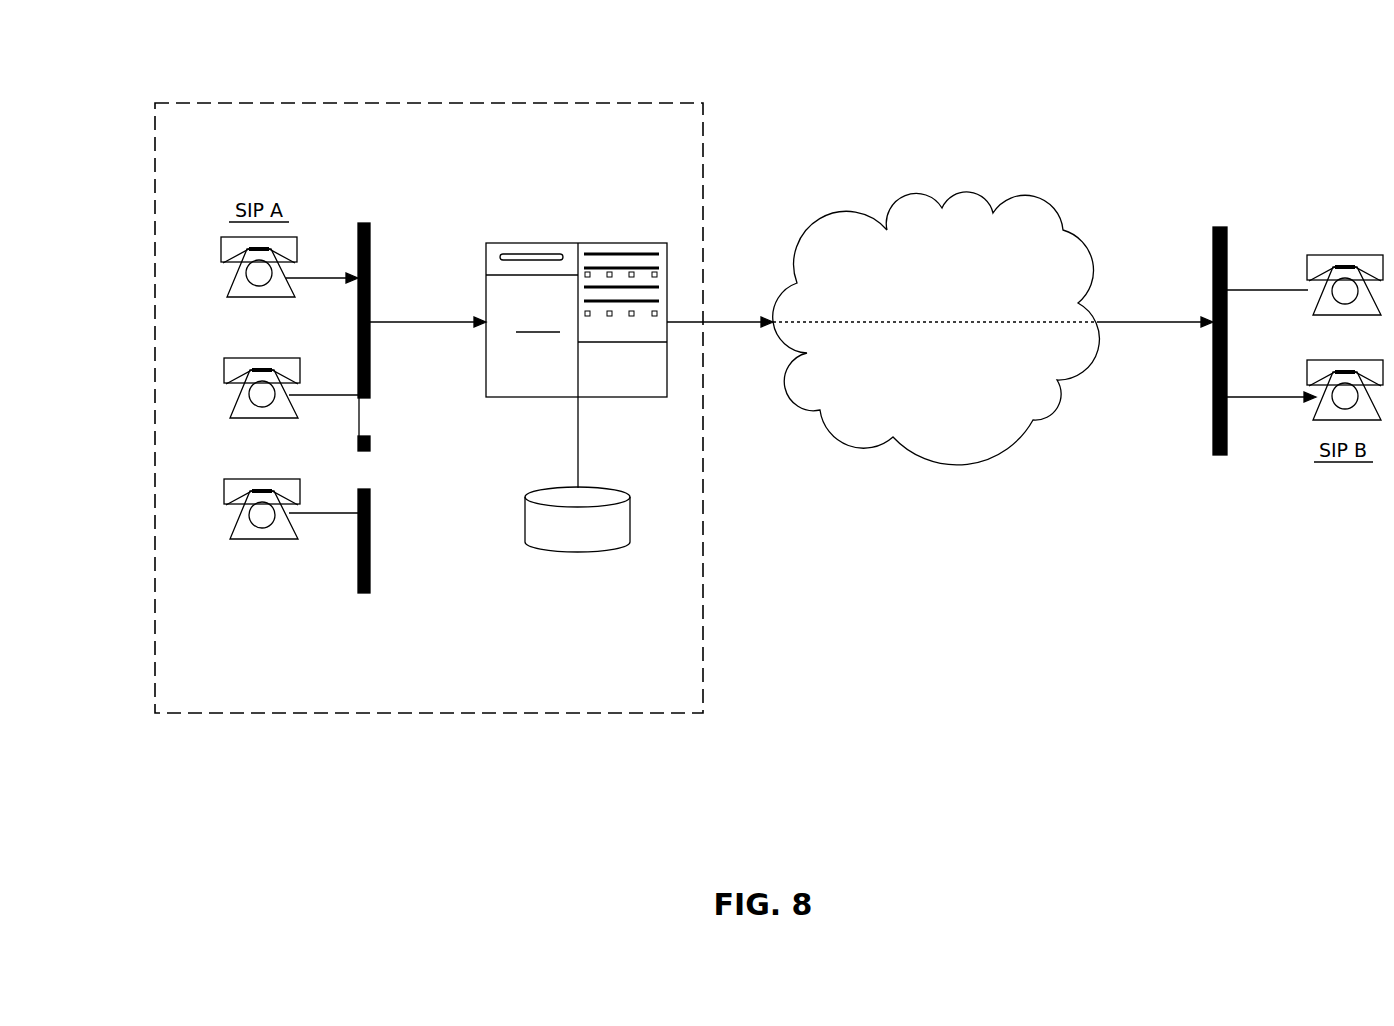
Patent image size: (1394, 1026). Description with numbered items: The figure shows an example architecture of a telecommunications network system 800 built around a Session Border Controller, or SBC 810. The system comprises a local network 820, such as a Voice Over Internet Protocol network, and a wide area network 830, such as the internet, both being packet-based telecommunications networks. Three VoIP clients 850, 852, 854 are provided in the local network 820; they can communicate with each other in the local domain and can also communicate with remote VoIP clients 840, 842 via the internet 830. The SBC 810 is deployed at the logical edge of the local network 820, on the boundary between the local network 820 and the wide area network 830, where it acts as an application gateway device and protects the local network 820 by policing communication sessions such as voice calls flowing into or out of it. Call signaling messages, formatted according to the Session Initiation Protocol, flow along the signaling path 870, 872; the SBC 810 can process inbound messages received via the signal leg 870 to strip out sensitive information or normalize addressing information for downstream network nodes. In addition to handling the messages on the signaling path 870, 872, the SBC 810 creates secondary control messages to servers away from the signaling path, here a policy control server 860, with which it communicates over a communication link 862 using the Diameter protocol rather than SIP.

The telecommunications network system 800 is at (340, 804).
The Session Border Controller (SBC) 810 is at (575, 278).
The local network 820 is at (429, 364).
The wide area network 830 is at (936, 352).
The remote VoIP client 840 is at (1305, 237).
The remote VoIP client 842 is at (1305, 436).
The VoIP client 850 is at (221, 285).
The VoIP client 852 is at (223, 404).
The VoIP client 854 is at (222, 523).
The policy control server 860 is at (583, 566).
The communication link 862 is at (505, 442).
The signal leg 870 is at (428, 372).
The signaling path 872 is at (720, 371).